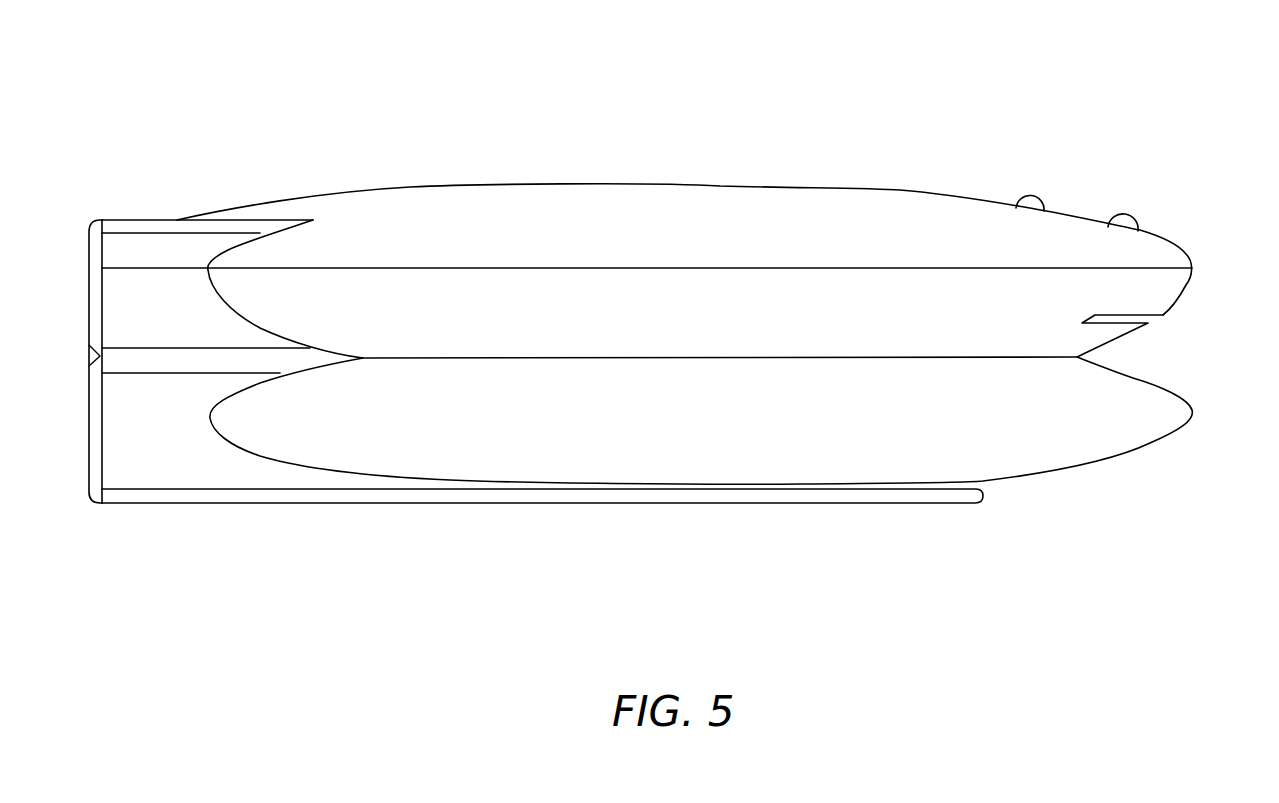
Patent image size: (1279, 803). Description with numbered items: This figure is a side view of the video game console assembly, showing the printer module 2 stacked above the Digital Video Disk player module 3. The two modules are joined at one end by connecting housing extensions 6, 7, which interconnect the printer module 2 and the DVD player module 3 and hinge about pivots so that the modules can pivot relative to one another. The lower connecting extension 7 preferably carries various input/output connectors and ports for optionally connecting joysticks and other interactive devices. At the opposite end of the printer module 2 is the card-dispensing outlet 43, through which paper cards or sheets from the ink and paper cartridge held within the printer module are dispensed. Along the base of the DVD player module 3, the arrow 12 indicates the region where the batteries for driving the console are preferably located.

The printer module 2 is at (545, 228).
The DVD player module 3 is at (1115, 383).
The connecting housing extension 6 is at (202, 312).
The lower connecting extension 7 is at (202, 433).
The arrow indicating battery location 12 is at (683, 506).
The card-dispensing outlet 43 is at (1160, 317).